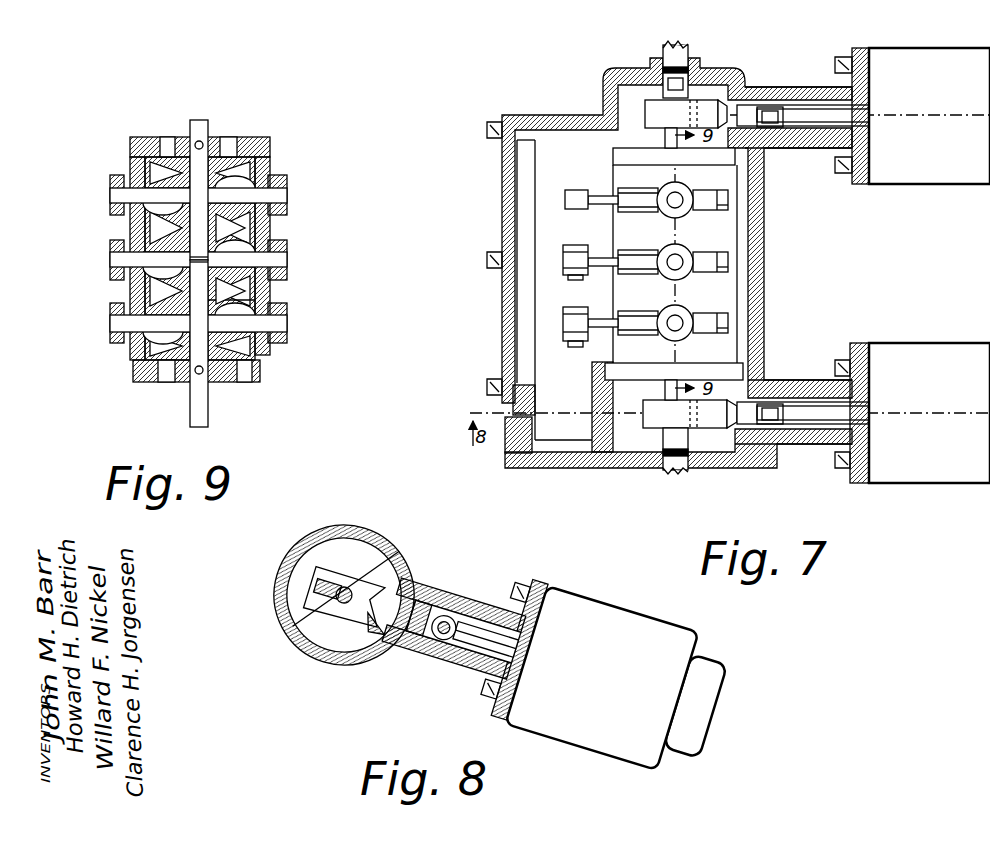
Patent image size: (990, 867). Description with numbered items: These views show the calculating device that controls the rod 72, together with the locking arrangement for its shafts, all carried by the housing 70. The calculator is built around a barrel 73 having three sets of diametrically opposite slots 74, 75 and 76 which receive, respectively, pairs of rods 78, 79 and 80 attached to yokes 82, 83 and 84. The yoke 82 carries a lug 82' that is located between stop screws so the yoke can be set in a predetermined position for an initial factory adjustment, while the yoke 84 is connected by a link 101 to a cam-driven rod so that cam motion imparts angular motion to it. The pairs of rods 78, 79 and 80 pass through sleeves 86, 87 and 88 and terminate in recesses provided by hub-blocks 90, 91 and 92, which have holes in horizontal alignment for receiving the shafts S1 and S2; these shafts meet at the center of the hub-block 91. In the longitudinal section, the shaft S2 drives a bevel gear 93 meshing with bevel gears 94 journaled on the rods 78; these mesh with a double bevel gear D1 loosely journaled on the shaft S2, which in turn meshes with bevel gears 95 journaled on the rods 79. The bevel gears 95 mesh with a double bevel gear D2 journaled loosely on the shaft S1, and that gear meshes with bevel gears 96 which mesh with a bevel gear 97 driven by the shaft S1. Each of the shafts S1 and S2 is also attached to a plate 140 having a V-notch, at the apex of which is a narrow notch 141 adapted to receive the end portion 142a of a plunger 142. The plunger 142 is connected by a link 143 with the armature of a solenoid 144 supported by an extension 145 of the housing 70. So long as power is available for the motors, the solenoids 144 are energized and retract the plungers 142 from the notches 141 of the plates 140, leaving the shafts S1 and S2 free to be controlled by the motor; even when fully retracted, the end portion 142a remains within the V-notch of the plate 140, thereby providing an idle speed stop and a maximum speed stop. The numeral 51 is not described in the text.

In FIG. 7, the housing 70 is at (575, 115).
In FIG. 8, the housing 70 is at (348, 583).
In FIG. 7, the rod 72 is at (570, 276).
In FIG. 9, the barrel 73 is at (262, 140).
In FIG. 7, the barrel 73 is at (760, 238).
In FIG. 7, the slots 74 is at (719, 211).
In FIG. 7, the slots 75 is at (719, 273).
In FIG. 7, the slots 76 is at (716, 335).
In FIG. 9, the rods 78 is at (110, 193).
In FIG. 7, the rods 78 is at (677, 199).
In FIG. 9, the rods 79 is at (110, 258).
In FIG. 7, the rods 79 is at (678, 261).
In FIG. 9, the rods 80 is at (110, 325).
In FIG. 7, the rods 80 is at (678, 322).
In FIG. 9, the yoke 82 is at (193, 187).
In FIG. 7, the yoke 82 is at (623, 188).
In FIG. 7, the lug 82' is at (567, 187).
In FIG. 9, the yoke 83 is at (110, 245).
In FIG. 7, the yoke 83 is at (612, 260).
In FIG. 9, the yoke 84 is at (110, 312).
In FIG. 7, the yoke 84 is at (612, 322).
In FIG. 9, the sleeves 86 is at (148, 170).
In FIG. 7, the sleeves 86 is at (715, 200).
In FIG. 9, the sleeves 87 is at (140, 222).
In FIG. 7, the sleeves 87 is at (715, 262).
In FIG. 9, the sleeves 88 is at (140, 290).
In FIG. 7, the sleeves 88 is at (715, 323).
In FIG. 9, the hub-block 90 is at (150, 180).
In FIG. 9, the hub-block 91 is at (150, 235).
In FIG. 9, the hub-block 92 is at (150, 300).
In FIG. 9, the bevel gear 93 is at (218, 138).
In FIG. 9, the bevel gears 94 is at (265, 170).
In FIG. 9, the bevel gears 95 is at (262, 240).
In FIG. 9, the bevel gears 96 is at (262, 300).
In FIG. 9, the bevel gear 97 is at (262, 352).
In FIG. 7, the link 101 is at (570, 349).
In FIG. 7, the plate 140 is at (652, 100).
In FIG. 8, the plate 140 is at (355, 564).
In FIG. 8, the notch 141 is at (445, 567).
In FIG. 7, the plunger 142 is at (744, 103).
In FIG. 8, the plunger 142 is at (438, 585).
In FIG. 8, the end portion 142a is at (381, 658).
In FIG. 7, the link 143 is at (818, 125).
In FIG. 8, the link 143 is at (480, 656).
In FIG. 7, the solenoid 144 is at (930, 186).
In FIG. 8, the solenoid 144 is at (634, 634).
In FIG. 7, the extension 145 is at (788, 86).
In FIG. 8, the extension 145 is at (465, 611).
In FIG. 7, the drive shaft 51 is at (673, 476).
In FIG. 8, the drive shaft 51 is at (333, 639).
In FIG. 9, the shaft S1 is at (190, 407).
In FIG. 9, the shaft S2 is at (201, 118).
In FIG. 7, the shaft S2 is at (665, 48).
In FIG. 9, the double bevel gear D1 is at (232, 228).
In FIG. 9, the double bevel gear D2 is at (232, 291).